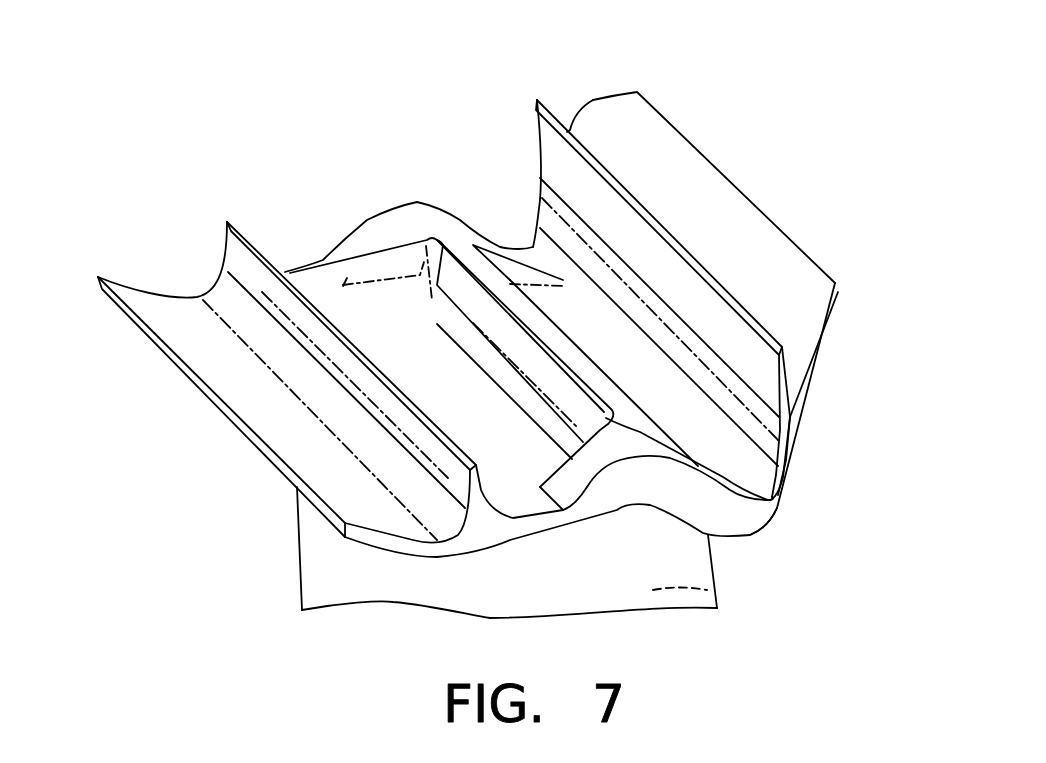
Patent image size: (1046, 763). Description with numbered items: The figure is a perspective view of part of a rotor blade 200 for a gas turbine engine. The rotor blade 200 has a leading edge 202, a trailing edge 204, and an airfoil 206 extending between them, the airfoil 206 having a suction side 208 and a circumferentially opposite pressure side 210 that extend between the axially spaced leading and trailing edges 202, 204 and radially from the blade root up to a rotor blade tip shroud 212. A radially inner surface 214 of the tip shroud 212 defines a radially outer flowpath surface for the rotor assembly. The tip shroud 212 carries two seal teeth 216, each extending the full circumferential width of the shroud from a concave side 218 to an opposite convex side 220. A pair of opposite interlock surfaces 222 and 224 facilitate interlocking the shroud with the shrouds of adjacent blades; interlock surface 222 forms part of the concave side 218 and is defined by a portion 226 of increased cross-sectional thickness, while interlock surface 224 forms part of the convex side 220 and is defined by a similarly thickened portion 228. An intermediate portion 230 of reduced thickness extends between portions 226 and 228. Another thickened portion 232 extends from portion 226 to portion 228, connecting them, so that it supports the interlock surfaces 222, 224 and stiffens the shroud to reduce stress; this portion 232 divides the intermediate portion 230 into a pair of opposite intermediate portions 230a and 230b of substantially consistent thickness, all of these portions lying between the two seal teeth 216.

The rotor blade 200 is at (182, 110).
The leading edge 202 is at (297, 547).
The trailing edge 204 is at (713, 570).
The airfoil 206 is at (542, 573).
The suction side 208 is at (328, 560).
The pressure side 210 is at (727, 607).
The rotor blade tip shroud 212 is at (595, 92).
The radially inner surface 214 is at (248, 392).
The seal teeth 216 is at (240, 260).
The concave side 218 is at (460, 220).
The convex side 220 is at (773, 520).
The interlock surface 222 is at (385, 210).
The interlock surface 224 is at (630, 502).
The portion of tip shroud 226 is at (360, 217).
The portion of tip shroud 228 is at (640, 430).
The intermediate portion 230 is at (313, 218).
The intermediate portion 230a is at (488, 418).
The intermediate portion 230b is at (592, 328).
The portion of tip shroud 232 is at (613, 337).